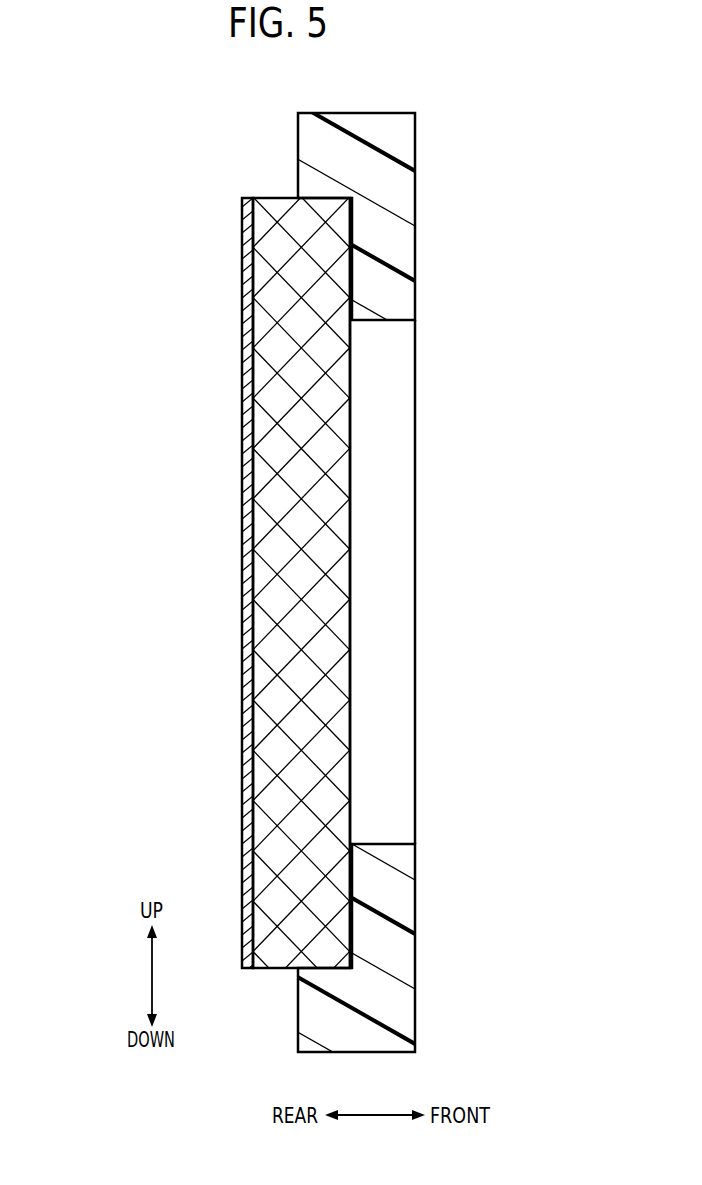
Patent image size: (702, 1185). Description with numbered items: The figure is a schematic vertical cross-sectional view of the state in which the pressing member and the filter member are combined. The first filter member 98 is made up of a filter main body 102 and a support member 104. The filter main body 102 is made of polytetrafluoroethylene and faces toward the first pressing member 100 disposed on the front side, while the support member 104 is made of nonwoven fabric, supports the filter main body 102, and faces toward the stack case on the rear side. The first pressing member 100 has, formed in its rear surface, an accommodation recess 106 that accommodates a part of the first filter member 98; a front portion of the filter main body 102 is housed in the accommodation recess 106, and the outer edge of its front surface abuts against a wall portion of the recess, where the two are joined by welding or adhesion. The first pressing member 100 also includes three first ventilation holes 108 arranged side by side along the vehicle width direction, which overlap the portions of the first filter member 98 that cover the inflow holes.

The first filter member 98 is at (162, 450).
The first pressing member 100 is at (415, 239).
The filter main body 102 is at (283, 511).
The support member 104 is at (250, 465).
The accommodation recess 106 is at (350, 280).
The first ventilation holes 108 is at (398, 323).